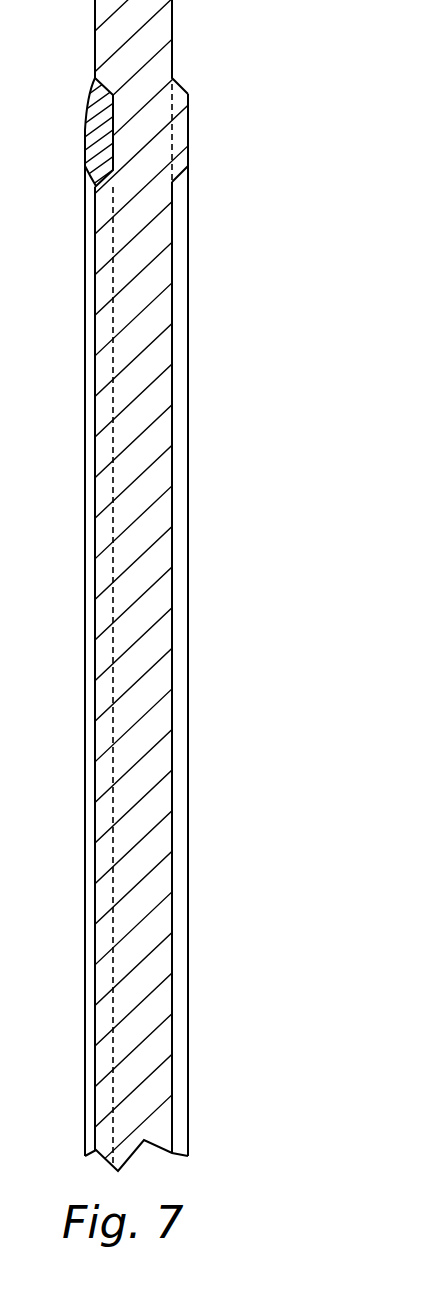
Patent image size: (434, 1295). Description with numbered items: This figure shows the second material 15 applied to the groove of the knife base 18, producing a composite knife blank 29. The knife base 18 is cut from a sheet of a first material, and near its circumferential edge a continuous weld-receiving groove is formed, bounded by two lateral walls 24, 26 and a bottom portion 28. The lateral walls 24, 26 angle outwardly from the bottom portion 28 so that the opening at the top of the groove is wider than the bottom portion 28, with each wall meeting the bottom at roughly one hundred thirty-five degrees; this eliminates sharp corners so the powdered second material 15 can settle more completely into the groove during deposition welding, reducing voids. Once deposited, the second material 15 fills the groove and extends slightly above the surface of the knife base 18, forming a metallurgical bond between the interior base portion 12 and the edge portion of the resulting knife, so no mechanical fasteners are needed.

The interior base portion 12 is at (172, 752).
The knife base 18 is at (197, 392).
The composite knife blank 29 is at (200, 60).
The bottom portion 28 is at (113, 141).
The lateral wall 24 is at (92, 101).
The second material 15 is at (90, 128).
The lateral wall 26 is at (87, 165).